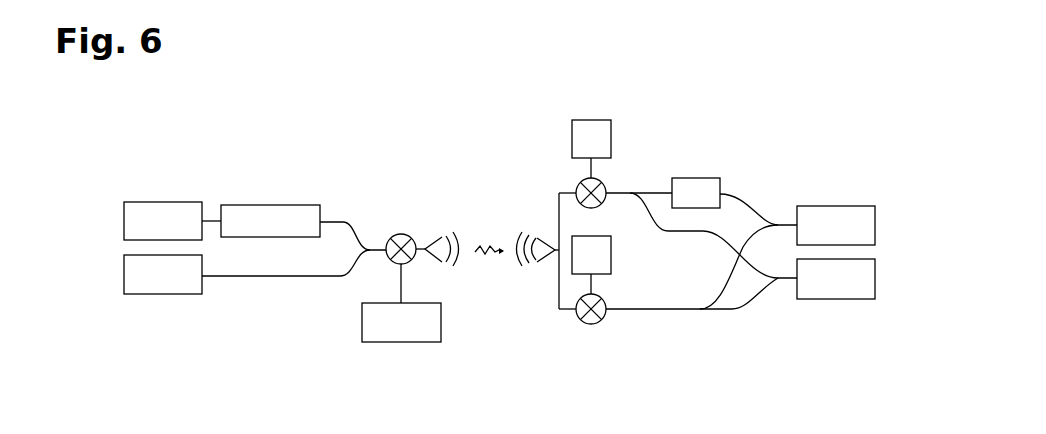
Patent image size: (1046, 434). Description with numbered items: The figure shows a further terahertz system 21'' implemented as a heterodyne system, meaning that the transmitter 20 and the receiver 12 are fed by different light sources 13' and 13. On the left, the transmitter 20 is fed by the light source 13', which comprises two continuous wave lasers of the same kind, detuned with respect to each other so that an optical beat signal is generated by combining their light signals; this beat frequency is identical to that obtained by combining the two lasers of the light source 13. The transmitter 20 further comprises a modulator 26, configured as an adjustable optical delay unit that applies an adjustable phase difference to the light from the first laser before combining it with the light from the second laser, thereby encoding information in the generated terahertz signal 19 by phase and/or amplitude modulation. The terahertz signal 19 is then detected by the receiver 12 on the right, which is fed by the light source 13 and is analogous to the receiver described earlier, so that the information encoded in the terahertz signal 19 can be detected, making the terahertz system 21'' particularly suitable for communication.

The light source 13' is at (139, 221).
The modulator 26 is at (260, 204).
The terahertz system 21'' is at (364, 119).
The terahertz signal 19 is at (520, 265).
The transmitter 20 is at (282, 326).
The receiver 12 is at (722, 332).
The light source 13 is at (870, 250).